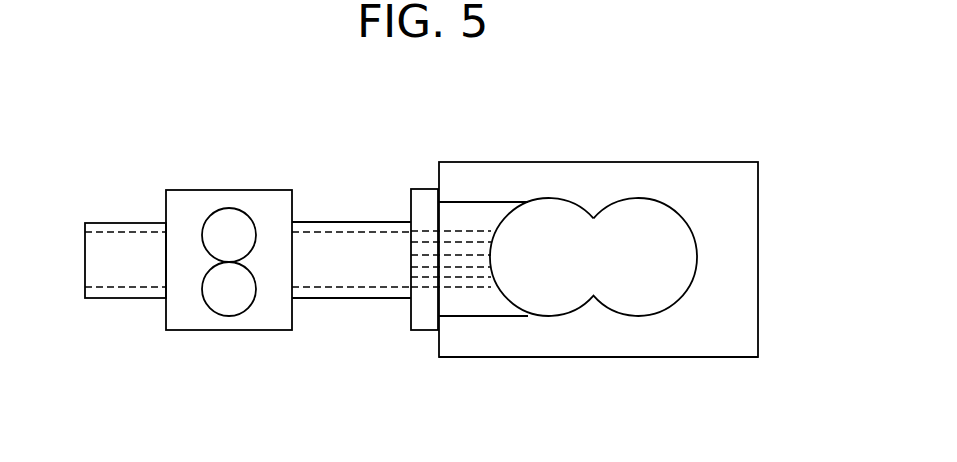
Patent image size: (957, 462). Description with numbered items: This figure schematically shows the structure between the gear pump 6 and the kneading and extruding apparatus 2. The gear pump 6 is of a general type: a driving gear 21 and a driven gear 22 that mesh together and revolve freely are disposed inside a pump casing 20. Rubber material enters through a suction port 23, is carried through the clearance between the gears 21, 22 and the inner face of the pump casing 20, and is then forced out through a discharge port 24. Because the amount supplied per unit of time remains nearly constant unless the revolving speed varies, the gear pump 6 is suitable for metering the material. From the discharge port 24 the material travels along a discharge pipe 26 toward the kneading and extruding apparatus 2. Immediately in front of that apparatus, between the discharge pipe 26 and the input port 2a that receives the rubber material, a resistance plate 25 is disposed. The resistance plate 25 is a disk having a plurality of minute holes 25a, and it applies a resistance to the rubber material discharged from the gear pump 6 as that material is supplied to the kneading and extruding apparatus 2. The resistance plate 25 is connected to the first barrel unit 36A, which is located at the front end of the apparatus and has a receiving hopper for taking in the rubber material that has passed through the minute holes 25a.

The kneading and extruding apparatus 2 is at (646, 261).
The input port 2a is at (470, 212).
The gear pump 6 is at (237, 270).
The pump casing 20 is at (165, 319).
The driving gear 21 is at (230, 218).
The driven gear 22 is at (237, 305).
The suction port 23 is at (162, 254).
The discharge port 24 is at (299, 247).
The resistance plate 25 is at (424, 273).
The minute holes 25a is at (415, 280).
The discharge pipe 26 is at (328, 299).
The first barrel unit 36A is at (643, 358).